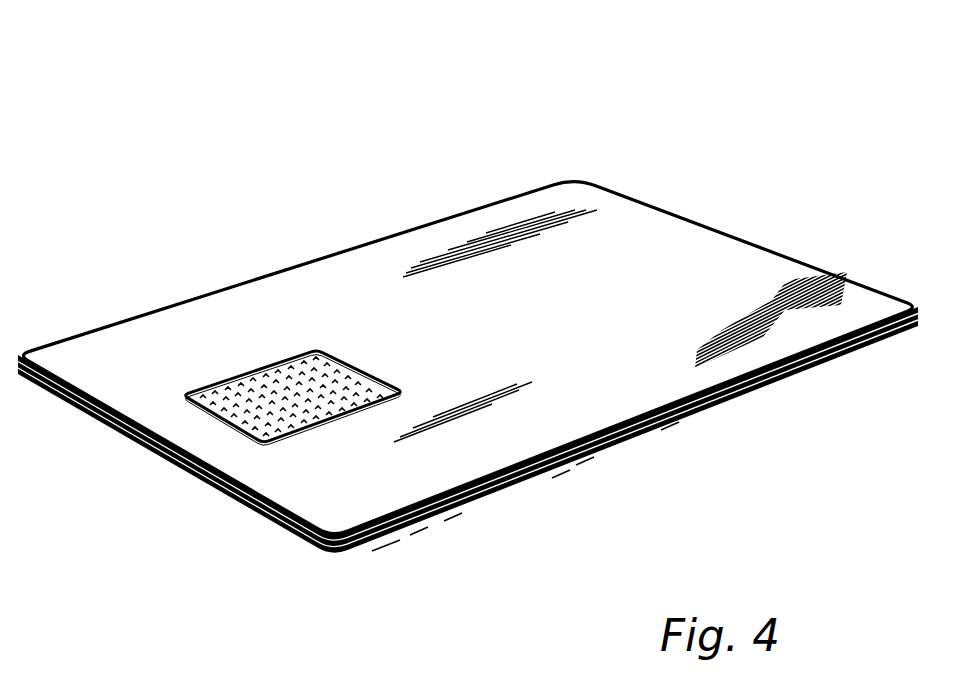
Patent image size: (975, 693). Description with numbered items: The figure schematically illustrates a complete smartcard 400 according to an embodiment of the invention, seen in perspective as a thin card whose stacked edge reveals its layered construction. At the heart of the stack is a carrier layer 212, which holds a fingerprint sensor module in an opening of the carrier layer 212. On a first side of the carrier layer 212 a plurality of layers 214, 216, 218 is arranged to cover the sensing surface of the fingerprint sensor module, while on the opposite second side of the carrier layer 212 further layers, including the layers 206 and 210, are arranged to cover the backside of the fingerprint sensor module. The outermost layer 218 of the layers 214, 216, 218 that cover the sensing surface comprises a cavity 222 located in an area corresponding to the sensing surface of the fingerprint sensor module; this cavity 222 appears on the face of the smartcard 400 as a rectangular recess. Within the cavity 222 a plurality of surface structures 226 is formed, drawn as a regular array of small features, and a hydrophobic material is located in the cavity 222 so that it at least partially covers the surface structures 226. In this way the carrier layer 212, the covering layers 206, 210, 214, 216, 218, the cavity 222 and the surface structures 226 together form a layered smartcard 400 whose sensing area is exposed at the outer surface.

The smartcard 400 is at (676, 112).
The layer 206 is at (390, 547).
The layer 210 is at (418, 530).
The carrier layer 212 is at (452, 515).
The layer 214 is at (560, 472).
The layer 216 is at (585, 459).
The outermost layer 218 is at (672, 424).
The cavity 222 is at (264, 372).
The surface structures 226 is at (331, 383).